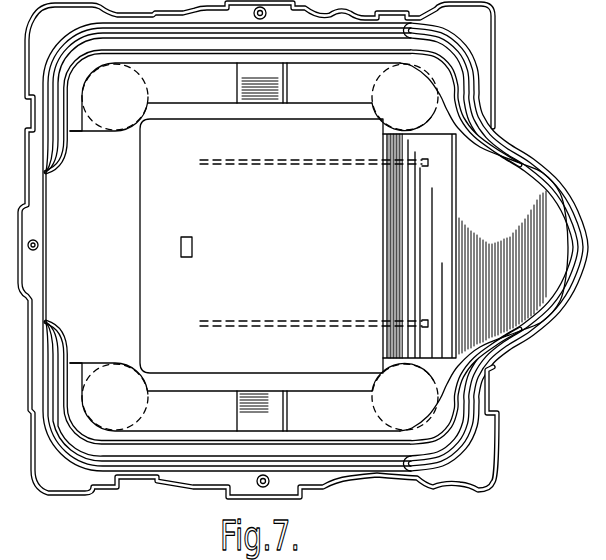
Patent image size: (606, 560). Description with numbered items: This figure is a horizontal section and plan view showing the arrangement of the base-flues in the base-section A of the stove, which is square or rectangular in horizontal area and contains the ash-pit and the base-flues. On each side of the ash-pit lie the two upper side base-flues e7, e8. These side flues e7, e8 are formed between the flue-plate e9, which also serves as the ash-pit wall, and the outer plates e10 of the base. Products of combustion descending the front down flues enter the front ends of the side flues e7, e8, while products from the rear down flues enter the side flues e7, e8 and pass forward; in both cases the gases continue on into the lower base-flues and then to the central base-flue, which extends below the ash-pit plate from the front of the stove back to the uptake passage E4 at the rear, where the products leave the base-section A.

The upper side base-flue e7 is at (302, 116).
The upper side base-flue e8 is at (221, 397).
The flue-plate e9 is at (216, 387).
The outer plates of the base e10 is at (318, 45).
The uptake passage E4 is at (502, 272).
The base-section A is at (261, 246).